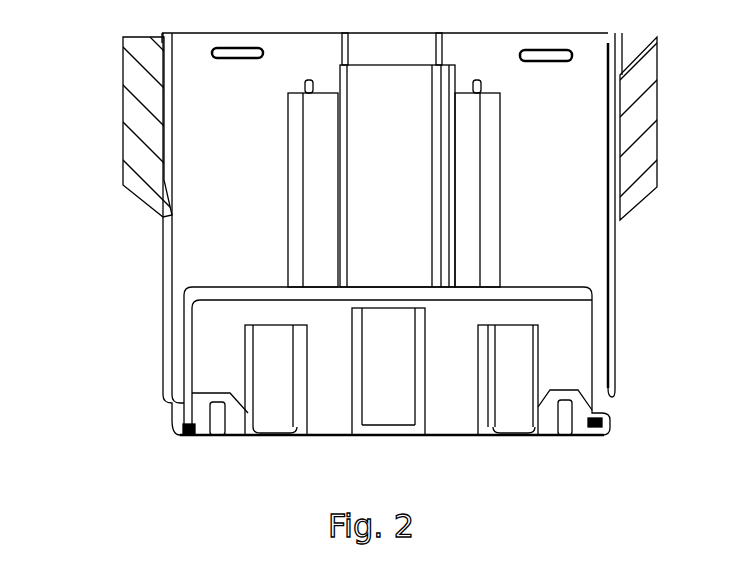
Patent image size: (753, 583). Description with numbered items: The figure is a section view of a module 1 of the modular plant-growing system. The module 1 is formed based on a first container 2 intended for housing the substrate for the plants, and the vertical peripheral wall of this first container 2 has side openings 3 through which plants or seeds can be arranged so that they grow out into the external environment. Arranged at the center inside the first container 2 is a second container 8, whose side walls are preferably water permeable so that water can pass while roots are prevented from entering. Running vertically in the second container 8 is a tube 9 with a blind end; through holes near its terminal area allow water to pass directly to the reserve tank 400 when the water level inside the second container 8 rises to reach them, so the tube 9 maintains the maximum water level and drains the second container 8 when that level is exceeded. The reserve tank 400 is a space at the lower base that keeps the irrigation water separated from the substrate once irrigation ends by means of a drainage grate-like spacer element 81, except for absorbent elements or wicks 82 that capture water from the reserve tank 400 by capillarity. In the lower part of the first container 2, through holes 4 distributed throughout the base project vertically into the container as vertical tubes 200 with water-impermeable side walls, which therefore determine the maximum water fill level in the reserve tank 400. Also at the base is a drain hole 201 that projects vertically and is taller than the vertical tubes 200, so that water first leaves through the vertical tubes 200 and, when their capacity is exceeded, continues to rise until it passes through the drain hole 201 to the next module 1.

The module 1 is at (85, 203).
The first container 2 is at (525, 245).
The side openings 3 is at (122, 127).
The through holes 4 is at (270, 433).
The second container 8 is at (366, 262).
The tube 9 is at (395, 44).
The drainage grate-like spacer element 81 is at (612, 317).
The absorbent elements or wicks 82 is at (190, 412).
The vertical tubes 200 is at (285, 338).
The drain hole 201 is at (400, 412).
The reserve tank 400 is at (188, 367).